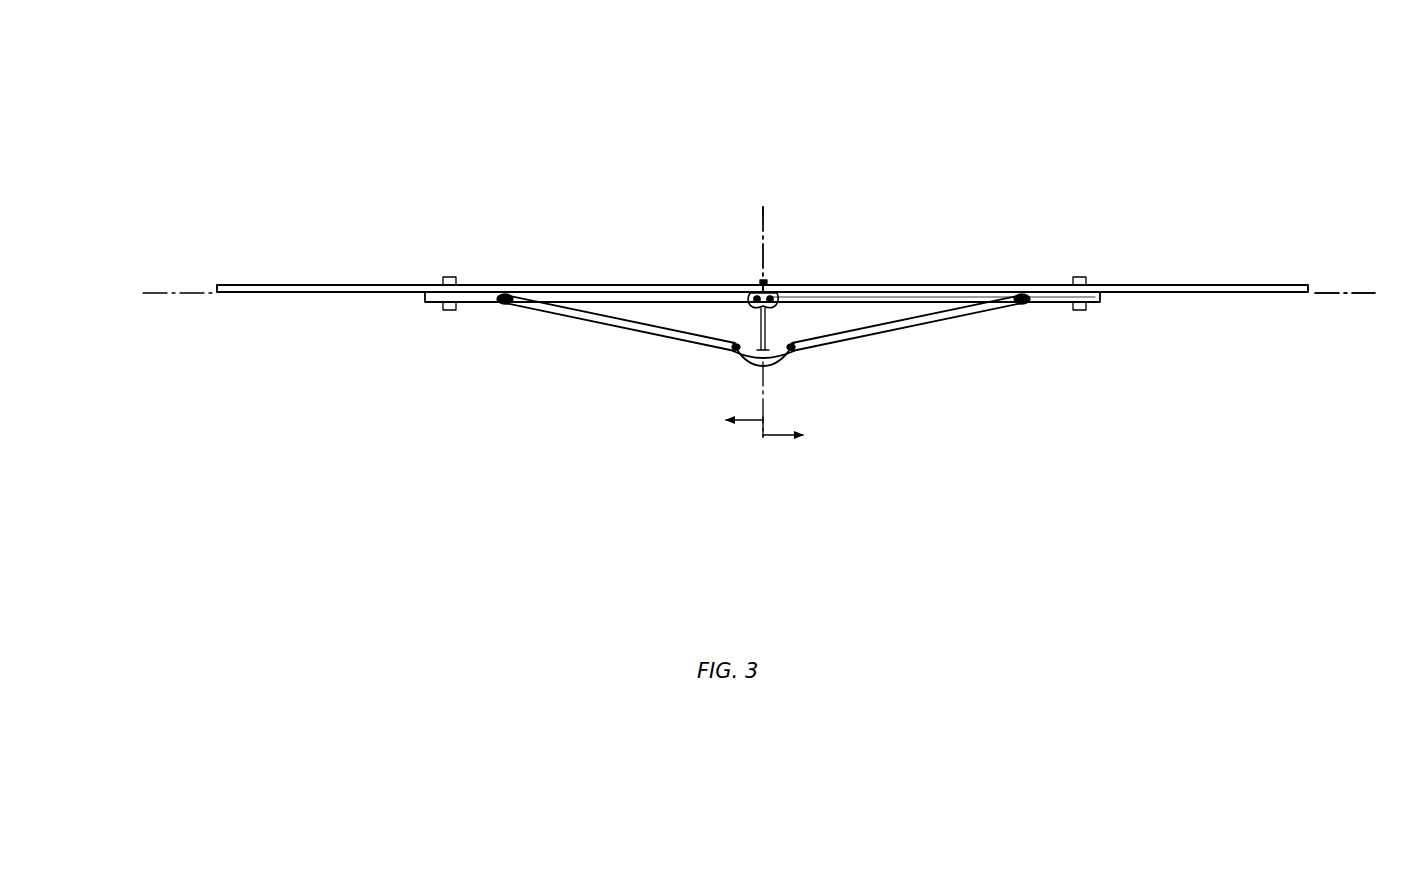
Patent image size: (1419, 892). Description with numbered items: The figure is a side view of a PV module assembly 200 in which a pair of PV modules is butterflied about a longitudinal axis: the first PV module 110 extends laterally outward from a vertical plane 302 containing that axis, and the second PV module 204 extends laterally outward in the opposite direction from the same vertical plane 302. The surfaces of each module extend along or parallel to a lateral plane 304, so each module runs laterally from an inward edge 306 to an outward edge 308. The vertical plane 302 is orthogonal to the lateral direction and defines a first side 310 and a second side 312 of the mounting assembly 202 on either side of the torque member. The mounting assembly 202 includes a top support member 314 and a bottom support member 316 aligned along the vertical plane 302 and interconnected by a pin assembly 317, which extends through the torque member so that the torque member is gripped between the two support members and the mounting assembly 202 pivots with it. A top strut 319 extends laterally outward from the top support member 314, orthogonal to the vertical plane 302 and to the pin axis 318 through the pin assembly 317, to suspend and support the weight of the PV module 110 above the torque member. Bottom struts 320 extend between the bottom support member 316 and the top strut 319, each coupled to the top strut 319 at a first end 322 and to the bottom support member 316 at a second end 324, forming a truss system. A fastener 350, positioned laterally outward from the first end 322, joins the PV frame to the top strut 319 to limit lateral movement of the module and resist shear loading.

The PV module assembly 200 is at (942, 78).
The mounting assembly 202 is at (468, 310).
The second PV module 204 is at (285, 278).
The first PV module 110 is at (1183, 277).
The vertical plane 302 is at (778, 172).
The pin axis 318 is at (760, 190).
The lateral plane 304 is at (1370, 293).
The inward edge 306 is at (765, 284).
The outward edge 308 is at (217, 285).
The first side 310 is at (775, 437).
The second side 312 is at (750, 421).
The top support member 314 is at (745, 291).
The bottom support member 316 is at (780, 360).
The pin assembly 317 is at (734, 350).
The top strut 319 is at (843, 297).
The bottom strut 320 is at (600, 320).
The first end 322 is at (509, 296).
The second end 324 is at (797, 350).
The fastener 350 is at (447, 277).